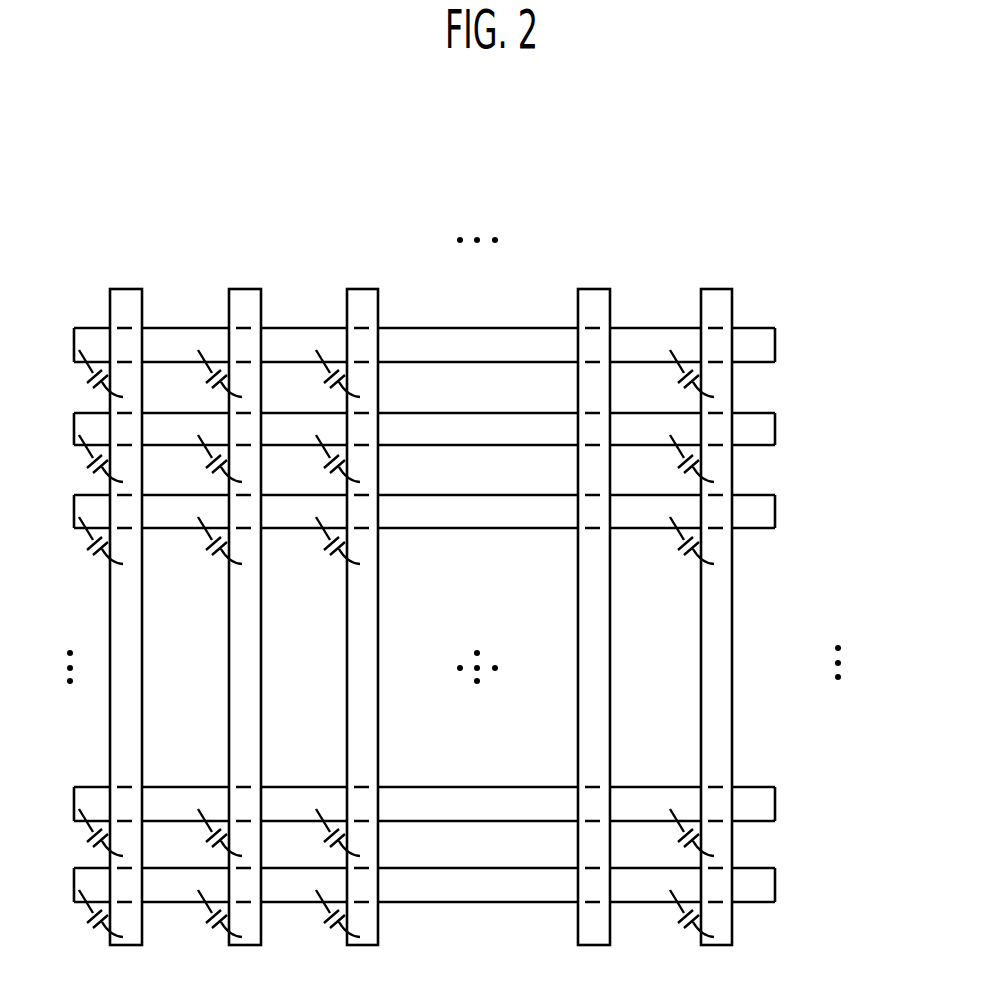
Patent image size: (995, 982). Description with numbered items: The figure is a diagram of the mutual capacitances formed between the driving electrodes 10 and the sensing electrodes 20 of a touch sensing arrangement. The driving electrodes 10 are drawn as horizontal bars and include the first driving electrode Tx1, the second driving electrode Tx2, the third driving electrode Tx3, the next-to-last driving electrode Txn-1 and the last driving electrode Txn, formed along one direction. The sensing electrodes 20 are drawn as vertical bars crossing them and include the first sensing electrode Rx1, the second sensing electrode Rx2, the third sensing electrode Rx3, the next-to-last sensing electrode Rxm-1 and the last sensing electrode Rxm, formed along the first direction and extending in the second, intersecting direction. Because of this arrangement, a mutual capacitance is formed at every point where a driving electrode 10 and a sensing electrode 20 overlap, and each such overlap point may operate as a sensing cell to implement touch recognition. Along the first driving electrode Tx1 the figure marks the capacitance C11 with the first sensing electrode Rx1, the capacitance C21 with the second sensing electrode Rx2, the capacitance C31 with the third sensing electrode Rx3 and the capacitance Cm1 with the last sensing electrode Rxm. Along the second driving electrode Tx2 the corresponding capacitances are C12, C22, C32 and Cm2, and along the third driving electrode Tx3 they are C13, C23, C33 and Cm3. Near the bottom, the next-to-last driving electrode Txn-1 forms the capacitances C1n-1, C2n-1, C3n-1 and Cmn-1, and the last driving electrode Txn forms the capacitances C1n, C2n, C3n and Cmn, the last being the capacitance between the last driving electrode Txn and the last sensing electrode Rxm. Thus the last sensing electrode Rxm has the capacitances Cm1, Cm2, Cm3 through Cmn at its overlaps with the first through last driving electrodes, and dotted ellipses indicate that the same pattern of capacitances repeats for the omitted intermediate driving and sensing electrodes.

The driving electrode 10 is at (491, 613).
The sensing electrode 20 is at (432, 559).
The first driving electrode Tx1 is at (459, 345).
The second driving electrode Tx2 is at (459, 430).
The third driving electrode Tx3 is at (459, 511).
The (n-1)-th driving electrode Txn-1 is at (471, 805).
The n-th driving electrode Txn is at (459, 885).
The first sensing electrode Rx1 is at (126, 289).
The second sensing electrode Rx2 is at (246, 289).
The third sensing electrode Rx3 is at (365, 289).
The (m-1)-th sensing electrode Rxm-1 is at (589, 289).
The m-th sensing electrode Rxm is at (728, 584).
The capacitance C11 is at (88, 377).
The capacitance C21 is at (206, 377).
The capacitance C31 is at (324, 377).
The capacitance Cm1 is at (673, 377).
The capacitance C12 is at (88, 462).
The capacitance C22 is at (206, 462).
The capacitance C32 is at (324, 462).
The capacitance Cm2 is at (673, 462).
The capacitance C13 is at (88, 544).
The capacitance C23 is at (206, 544).
The capacitance C33 is at (324, 544).
The capacitance Cm3 is at (673, 544).
The capacitance C1n-1 is at (76, 835).
The capacitance C2n-1 is at (196, 835).
The capacitance C3n-1 is at (314, 835).
The capacitance Cmn-1 is at (664, 835).
The capacitance C1n is at (88, 916).
The capacitance C2n is at (207, 916).
The capacitance C3n is at (325, 916).
The capacitance Cmn is at (674, 916).